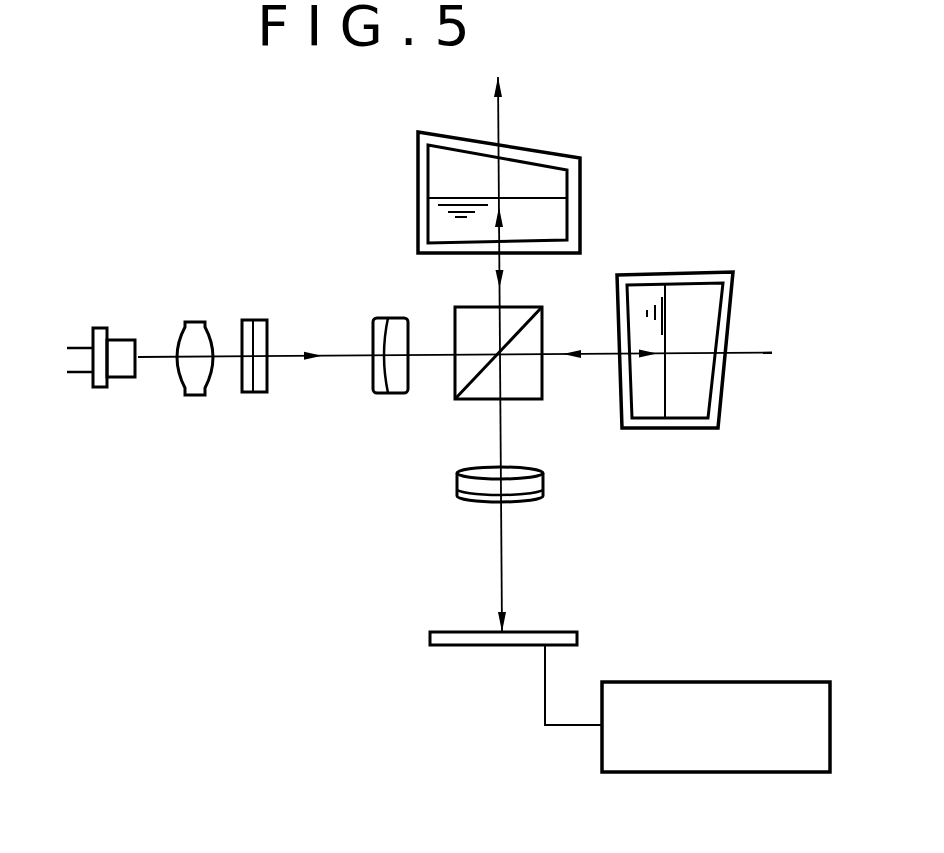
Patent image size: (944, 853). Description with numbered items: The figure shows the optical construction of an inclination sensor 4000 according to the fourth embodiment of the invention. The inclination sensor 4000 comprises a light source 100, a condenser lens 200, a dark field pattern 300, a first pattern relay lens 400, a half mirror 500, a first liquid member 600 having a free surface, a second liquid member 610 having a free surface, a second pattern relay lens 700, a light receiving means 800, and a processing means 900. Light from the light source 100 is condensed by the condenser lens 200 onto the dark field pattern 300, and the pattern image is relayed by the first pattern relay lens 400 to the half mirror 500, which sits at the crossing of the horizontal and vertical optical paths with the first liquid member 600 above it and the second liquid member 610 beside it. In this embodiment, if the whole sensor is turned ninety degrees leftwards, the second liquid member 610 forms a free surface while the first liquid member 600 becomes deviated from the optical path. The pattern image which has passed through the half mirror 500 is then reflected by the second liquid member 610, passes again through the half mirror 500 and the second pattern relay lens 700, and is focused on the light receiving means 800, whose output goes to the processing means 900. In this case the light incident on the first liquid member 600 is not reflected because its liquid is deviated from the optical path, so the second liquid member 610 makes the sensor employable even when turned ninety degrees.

The light source 100 is at (102, 328).
The condenser lens 200 is at (193, 322).
The dark field pattern 300 is at (257, 395).
The first pattern relay lens 400 is at (390, 318).
The half mirror 500 is at (533, 377).
The first liquid member 600 is at (537, 180).
The second liquid member 610 is at (687, 302).
The second pattern relay lens 700 is at (543, 485).
The light receiving means 800 is at (458, 648).
The processing means 900 is at (687, 680).
The inclination sensor 4000 is at (346, 450).